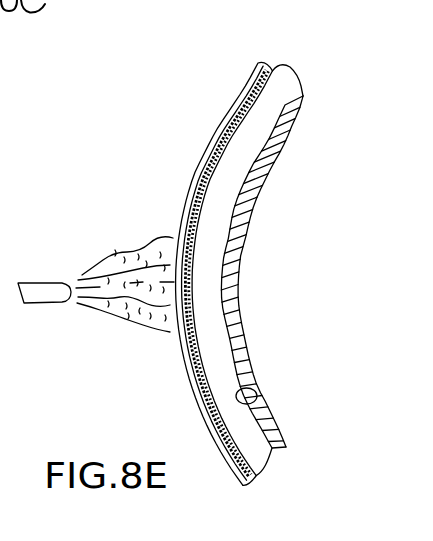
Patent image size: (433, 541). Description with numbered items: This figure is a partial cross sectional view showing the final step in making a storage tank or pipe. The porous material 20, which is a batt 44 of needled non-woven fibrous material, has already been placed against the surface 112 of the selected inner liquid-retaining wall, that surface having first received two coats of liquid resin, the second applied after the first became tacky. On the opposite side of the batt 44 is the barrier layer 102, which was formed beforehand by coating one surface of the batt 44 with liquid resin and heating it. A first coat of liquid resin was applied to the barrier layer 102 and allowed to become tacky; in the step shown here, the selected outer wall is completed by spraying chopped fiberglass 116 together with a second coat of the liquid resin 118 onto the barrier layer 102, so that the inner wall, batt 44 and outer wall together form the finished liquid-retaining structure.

The porous material 20 is at (279, 83).
The batt 44 is at (213, 138).
The barrier layer 102 is at (253, 72).
The surface of inner liquid-retaining wall 112 is at (257, 392).
The chopped fiberglass 116 is at (136, 251).
The second coat of liquid resin 118 is at (92, 276).